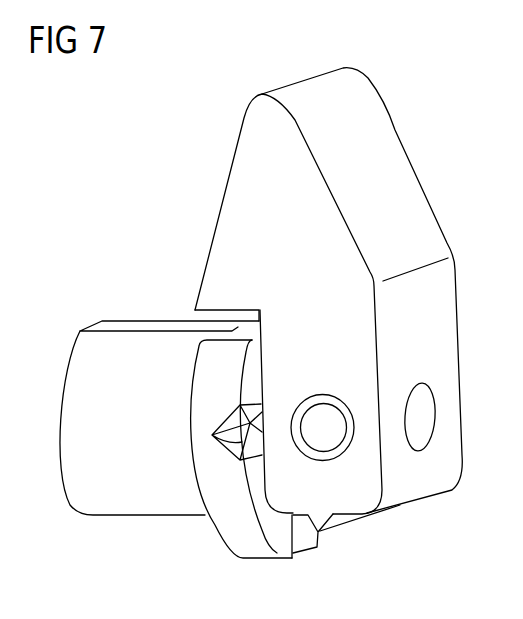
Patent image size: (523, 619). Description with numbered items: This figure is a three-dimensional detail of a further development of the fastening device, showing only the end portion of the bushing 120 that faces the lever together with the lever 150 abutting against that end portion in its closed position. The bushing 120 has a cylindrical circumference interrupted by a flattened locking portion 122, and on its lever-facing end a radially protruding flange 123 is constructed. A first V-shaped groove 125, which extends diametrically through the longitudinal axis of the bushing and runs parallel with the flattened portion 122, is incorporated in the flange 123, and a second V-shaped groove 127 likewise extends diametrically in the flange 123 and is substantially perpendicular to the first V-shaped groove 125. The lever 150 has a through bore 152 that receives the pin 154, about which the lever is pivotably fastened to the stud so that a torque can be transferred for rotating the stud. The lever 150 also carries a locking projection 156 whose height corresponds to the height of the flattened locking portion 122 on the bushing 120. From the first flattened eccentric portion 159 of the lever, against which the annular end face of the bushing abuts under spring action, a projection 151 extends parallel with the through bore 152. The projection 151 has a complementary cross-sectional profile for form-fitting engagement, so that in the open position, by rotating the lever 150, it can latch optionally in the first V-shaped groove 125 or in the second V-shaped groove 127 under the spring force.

The lever 150 is at (240, 187).
The locking projection 156 is at (233, 310).
The through bore 152 is at (307, 396).
The pin 154 is at (326, 420).
The flattened locking portion 122 is at (117, 322).
The bushing 120 is at (83, 487).
The flange 123 is at (213, 377).
The first V-shaped groove 125 is at (233, 442).
The projection 151 is at (291, 527).
The second V-shaped groove 127 is at (303, 540).
The first flattened eccentric portion 159 is at (348, 528).